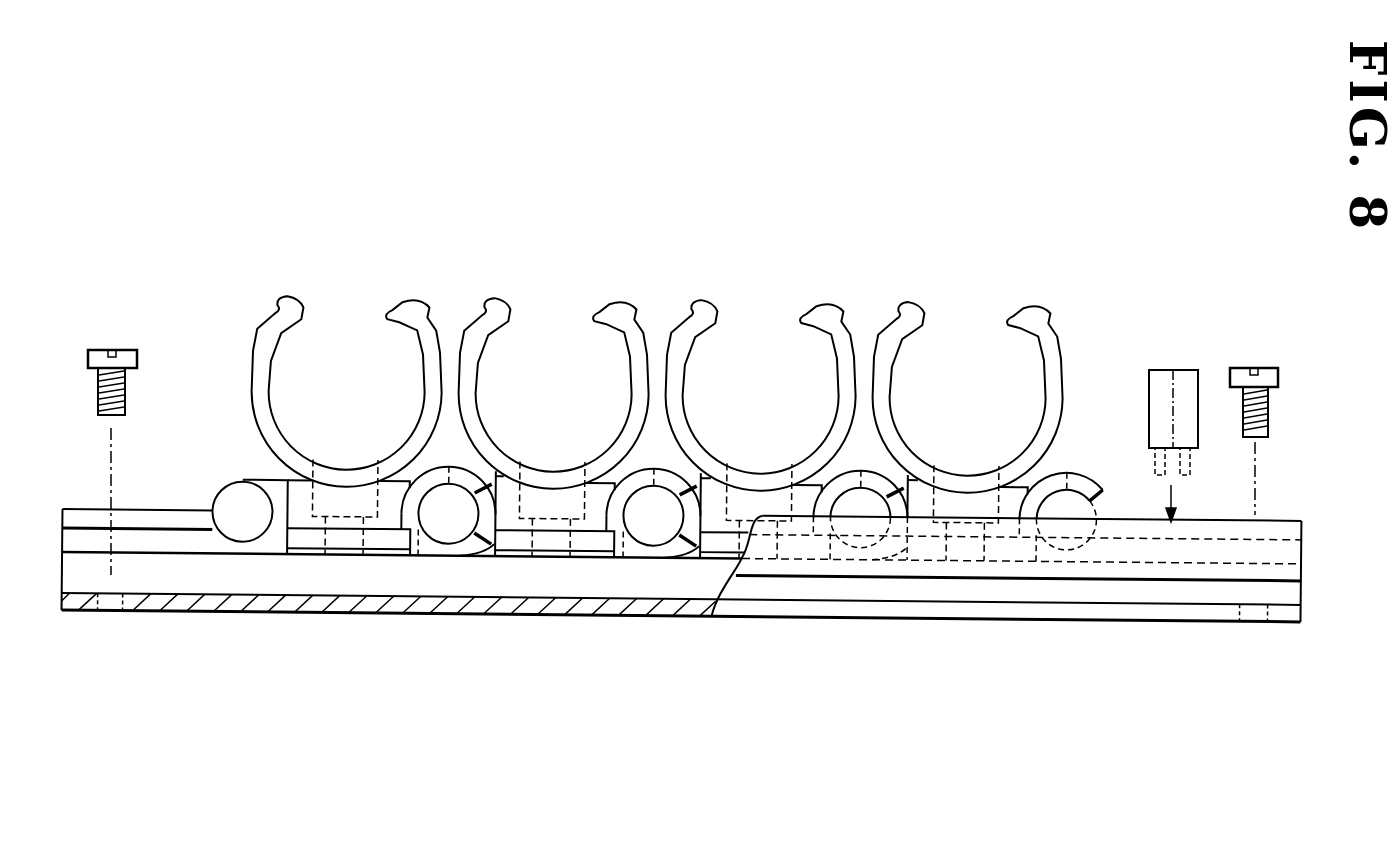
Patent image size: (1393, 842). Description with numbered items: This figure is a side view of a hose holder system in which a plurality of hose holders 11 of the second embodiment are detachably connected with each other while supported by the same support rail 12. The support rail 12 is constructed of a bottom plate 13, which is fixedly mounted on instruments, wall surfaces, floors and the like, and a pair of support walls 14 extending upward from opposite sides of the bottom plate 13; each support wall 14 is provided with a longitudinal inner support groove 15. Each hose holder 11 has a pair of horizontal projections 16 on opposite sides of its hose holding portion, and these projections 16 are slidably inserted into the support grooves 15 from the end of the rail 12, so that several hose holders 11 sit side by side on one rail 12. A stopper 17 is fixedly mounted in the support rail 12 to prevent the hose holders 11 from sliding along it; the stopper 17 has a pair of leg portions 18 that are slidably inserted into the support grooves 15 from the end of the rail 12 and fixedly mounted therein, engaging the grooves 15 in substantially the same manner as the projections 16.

The hose holder 11 is at (1060, 337).
The support rail 12 is at (918, 625).
The bottom plate 13 is at (823, 612).
The support walls 14 is at (128, 515).
The support grooves 15 is at (160, 540).
The horizontal projections 16 is at (315, 540).
The stopper 17 is at (1153, 368).
The leg portions 18 is at (1157, 467).